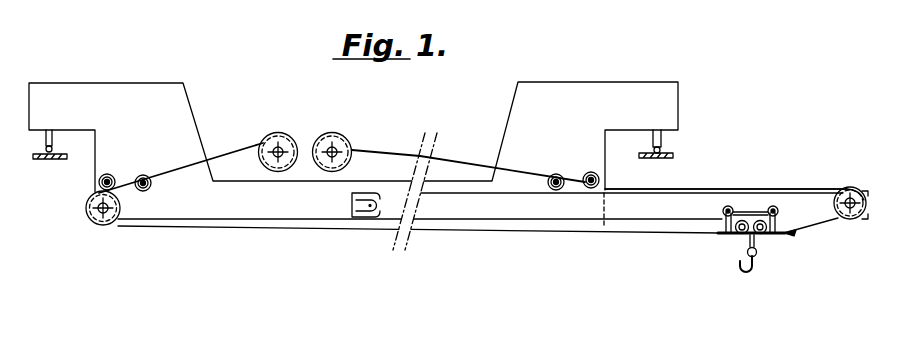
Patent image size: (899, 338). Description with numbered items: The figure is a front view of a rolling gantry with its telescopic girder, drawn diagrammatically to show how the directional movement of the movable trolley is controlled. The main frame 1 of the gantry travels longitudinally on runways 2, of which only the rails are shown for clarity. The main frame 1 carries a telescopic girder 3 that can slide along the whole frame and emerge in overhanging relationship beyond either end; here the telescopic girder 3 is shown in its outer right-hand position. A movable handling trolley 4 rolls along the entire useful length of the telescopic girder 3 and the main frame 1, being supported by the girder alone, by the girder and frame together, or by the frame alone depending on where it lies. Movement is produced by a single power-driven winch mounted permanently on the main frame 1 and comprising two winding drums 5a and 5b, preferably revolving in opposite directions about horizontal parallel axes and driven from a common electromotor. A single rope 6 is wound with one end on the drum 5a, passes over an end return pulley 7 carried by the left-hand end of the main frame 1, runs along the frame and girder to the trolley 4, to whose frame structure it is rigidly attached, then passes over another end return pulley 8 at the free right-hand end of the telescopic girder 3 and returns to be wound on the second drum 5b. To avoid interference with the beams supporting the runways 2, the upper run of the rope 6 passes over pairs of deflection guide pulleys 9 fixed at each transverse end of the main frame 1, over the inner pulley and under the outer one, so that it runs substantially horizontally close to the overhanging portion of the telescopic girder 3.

The main frame 1 is at (196, 115).
The runways 2 is at (53, 159).
The telescopic girder 3 is at (677, 199).
The movable handling trolley 4 is at (722, 224).
The winding drum 5a is at (280, 149).
The winding drum 5b is at (327, 139).
The rope 6 is at (450, 156).
The end return pulley 7 is at (102, 223).
The end return pulley 8 is at (847, 218).
The deflection guide pulleys 9 is at (139, 177).